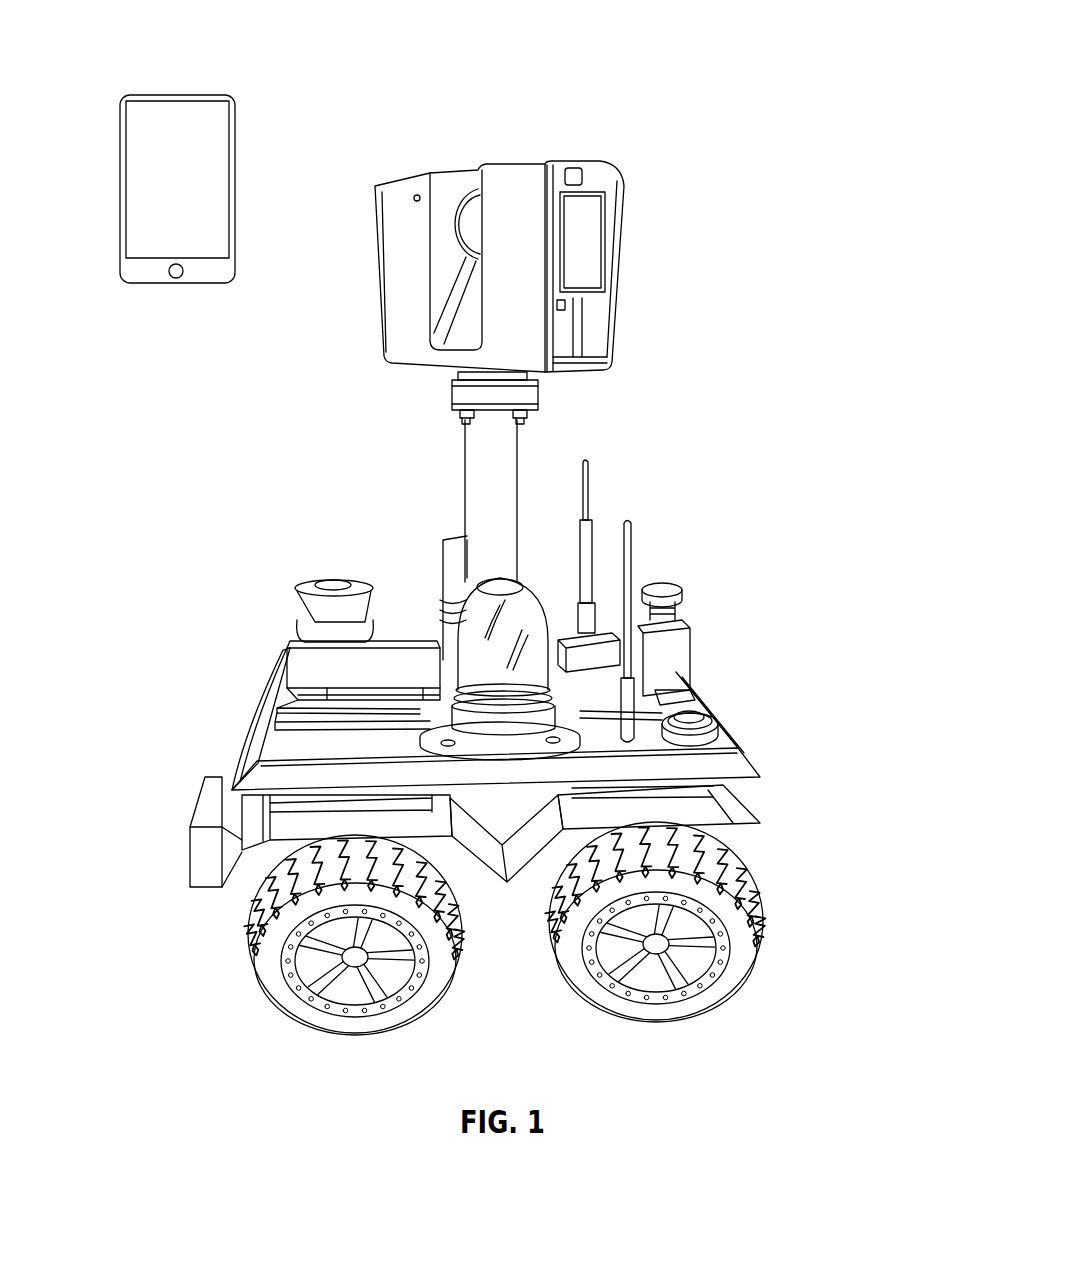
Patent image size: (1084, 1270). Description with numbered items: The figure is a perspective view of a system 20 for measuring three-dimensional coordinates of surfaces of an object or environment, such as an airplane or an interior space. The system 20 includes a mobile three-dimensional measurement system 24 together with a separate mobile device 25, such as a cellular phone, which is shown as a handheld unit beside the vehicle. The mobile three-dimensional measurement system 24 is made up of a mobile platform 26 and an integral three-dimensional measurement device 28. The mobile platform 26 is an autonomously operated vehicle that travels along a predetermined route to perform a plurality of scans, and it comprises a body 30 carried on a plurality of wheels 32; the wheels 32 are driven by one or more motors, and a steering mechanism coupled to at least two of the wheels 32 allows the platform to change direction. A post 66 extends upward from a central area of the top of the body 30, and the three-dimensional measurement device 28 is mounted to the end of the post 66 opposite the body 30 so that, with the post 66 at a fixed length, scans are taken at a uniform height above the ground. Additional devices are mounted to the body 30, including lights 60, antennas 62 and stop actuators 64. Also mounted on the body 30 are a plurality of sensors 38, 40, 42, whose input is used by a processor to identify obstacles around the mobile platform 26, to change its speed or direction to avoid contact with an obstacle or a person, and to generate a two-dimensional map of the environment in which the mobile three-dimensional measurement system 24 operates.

The system 20 is at (800, 40).
The mobile 3D measurement system 24 is at (765, 316).
The mobile device 25 is at (238, 151).
The mobile platform 26 is at (237, 660).
The 3D measurement device 28 is at (626, 249).
The body 30 is at (745, 760).
The wheels 32 is at (263, 958).
The sensor 38 is at (332, 586).
The sensor 40 is at (695, 716).
The sensor 42 is at (190, 833).
The lights 60 is at (446, 587).
The antennas 62 is at (632, 530).
The stop actuators 64 is at (684, 600).
The post 66 is at (478, 503).